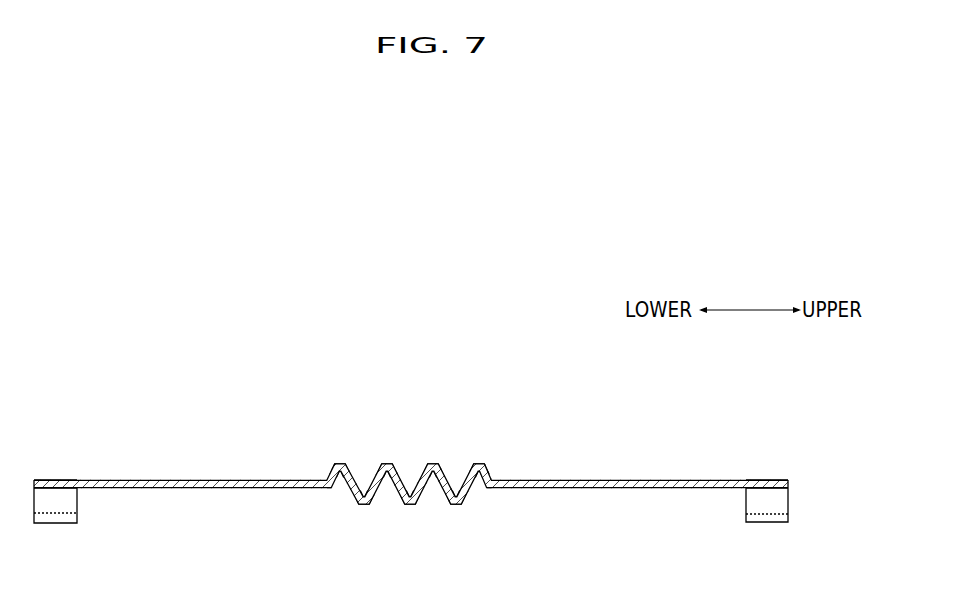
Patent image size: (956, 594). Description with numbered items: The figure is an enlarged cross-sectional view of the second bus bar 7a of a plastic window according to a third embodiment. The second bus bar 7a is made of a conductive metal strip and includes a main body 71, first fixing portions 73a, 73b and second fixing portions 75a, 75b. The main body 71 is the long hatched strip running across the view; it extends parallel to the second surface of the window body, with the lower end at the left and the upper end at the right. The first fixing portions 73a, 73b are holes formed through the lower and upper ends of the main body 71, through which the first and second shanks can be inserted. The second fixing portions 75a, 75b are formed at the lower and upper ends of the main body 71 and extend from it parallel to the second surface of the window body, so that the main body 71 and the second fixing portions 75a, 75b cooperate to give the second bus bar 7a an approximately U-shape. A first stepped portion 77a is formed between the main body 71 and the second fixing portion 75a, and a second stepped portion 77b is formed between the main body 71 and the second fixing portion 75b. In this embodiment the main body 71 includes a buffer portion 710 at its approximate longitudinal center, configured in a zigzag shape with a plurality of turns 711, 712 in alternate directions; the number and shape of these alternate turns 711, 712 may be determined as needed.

The second bus bar 7a is at (414, 486).
The main body 71 is at (414, 486).
The buffer portion 710 is at (378, 486).
The turn 711 is at (339, 462).
The turn 712 is at (363, 504).
The first fixing portion 73a is at (73, 487).
The first fixing portion 73b is at (767, 487).
The second fixing portion 75a is at (64, 518).
The second fixing portion 75b is at (765, 518).
The first stepped portion 77a is at (86, 529).
The second stepped portion 77b is at (740, 528).